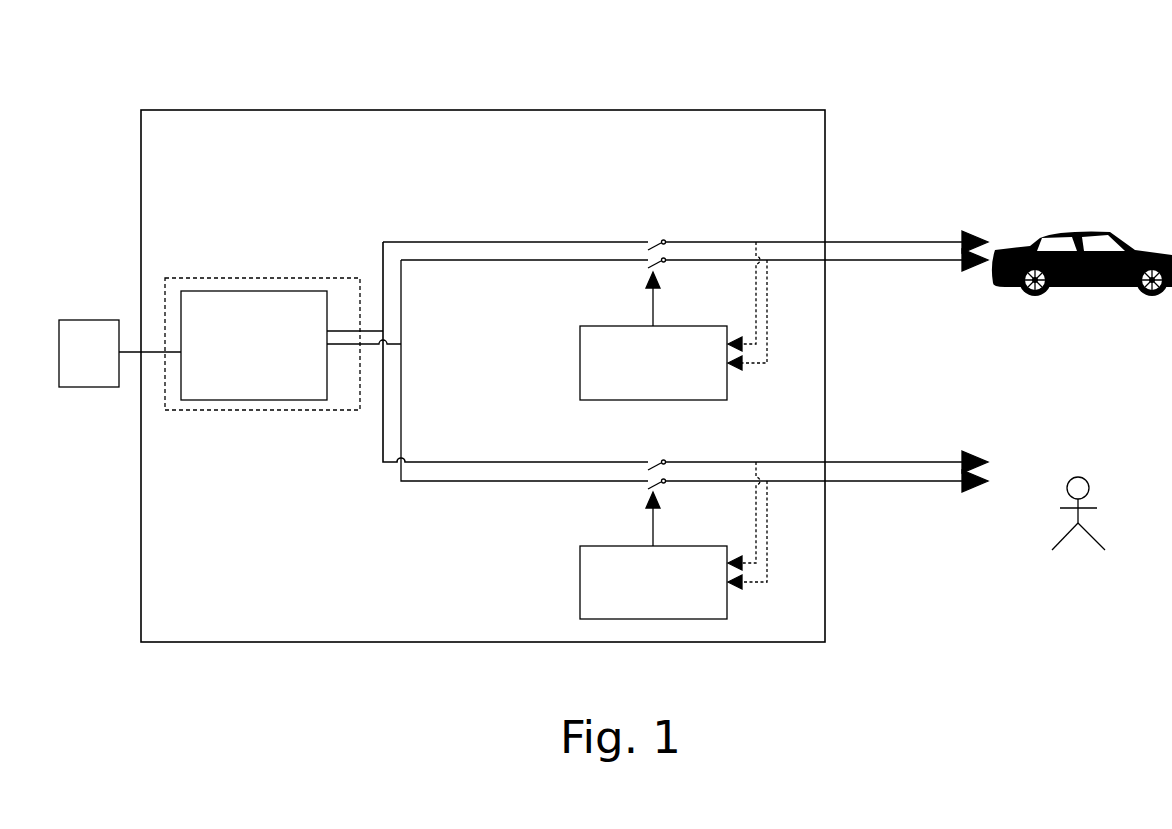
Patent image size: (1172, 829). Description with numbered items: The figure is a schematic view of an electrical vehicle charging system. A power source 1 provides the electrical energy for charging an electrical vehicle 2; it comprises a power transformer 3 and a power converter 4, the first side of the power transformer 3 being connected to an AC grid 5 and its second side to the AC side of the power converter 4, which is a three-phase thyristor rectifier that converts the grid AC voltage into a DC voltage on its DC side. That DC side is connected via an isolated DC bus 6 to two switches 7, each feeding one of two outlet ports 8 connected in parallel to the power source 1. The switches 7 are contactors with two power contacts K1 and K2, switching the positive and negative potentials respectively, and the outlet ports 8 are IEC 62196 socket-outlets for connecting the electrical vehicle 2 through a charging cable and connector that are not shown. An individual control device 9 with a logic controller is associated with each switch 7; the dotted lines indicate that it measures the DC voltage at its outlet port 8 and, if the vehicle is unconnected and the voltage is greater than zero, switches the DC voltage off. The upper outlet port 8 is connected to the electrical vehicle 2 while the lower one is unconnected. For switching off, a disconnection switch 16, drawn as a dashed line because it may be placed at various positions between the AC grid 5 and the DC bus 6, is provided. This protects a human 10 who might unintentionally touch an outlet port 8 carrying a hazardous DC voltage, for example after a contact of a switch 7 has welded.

The power source 1 is at (265, 345).
The power transformer 3 is at (265, 345).
The power converter 4 is at (218, 352).
The AC grid 5 is at (80, 364).
The isolated DC bus 6 is at (482, 252).
The switch 7 is at (652, 249).
The outlet port 8 is at (841, 249).
The control device 9 is at (645, 379).
The electrical vehicle 2 is at (1128, 260).
The human 10 is at (1088, 491).
The disconnection switch 16 is at (174, 403).